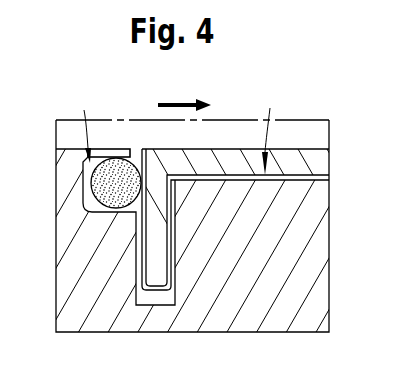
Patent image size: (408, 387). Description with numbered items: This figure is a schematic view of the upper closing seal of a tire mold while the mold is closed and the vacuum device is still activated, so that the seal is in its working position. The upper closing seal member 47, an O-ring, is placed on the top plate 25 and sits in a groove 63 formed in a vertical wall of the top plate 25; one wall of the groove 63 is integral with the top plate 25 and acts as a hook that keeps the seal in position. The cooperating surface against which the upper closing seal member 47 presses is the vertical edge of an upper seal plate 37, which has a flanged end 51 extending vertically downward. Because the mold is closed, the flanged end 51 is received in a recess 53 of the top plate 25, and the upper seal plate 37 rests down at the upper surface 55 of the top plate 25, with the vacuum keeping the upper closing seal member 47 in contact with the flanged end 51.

The top plate 25 is at (93, 268).
The upper seal plate 37 is at (322, 164).
The upper closing seal member 47 is at (80, 160).
The flanged end 51 is at (174, 228).
The recess 53 is at (177, 303).
The upper surface 55 is at (278, 131).
The groove 63 is at (84, 110).